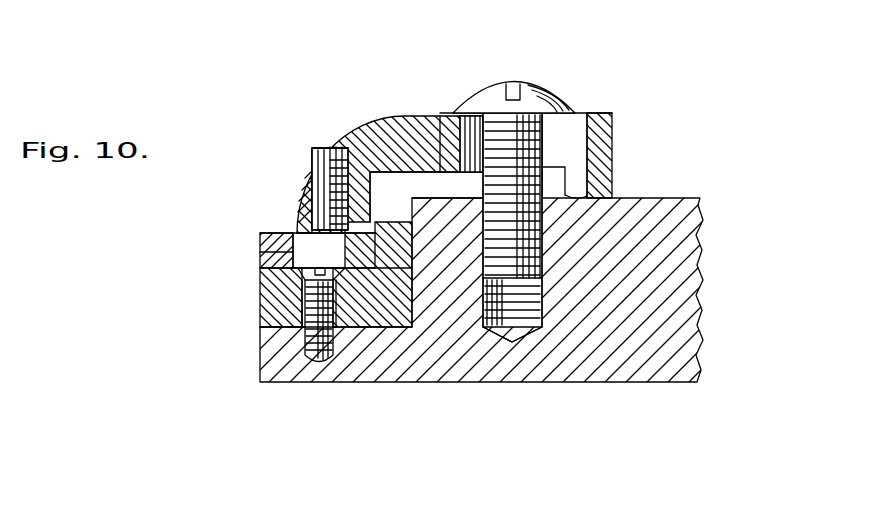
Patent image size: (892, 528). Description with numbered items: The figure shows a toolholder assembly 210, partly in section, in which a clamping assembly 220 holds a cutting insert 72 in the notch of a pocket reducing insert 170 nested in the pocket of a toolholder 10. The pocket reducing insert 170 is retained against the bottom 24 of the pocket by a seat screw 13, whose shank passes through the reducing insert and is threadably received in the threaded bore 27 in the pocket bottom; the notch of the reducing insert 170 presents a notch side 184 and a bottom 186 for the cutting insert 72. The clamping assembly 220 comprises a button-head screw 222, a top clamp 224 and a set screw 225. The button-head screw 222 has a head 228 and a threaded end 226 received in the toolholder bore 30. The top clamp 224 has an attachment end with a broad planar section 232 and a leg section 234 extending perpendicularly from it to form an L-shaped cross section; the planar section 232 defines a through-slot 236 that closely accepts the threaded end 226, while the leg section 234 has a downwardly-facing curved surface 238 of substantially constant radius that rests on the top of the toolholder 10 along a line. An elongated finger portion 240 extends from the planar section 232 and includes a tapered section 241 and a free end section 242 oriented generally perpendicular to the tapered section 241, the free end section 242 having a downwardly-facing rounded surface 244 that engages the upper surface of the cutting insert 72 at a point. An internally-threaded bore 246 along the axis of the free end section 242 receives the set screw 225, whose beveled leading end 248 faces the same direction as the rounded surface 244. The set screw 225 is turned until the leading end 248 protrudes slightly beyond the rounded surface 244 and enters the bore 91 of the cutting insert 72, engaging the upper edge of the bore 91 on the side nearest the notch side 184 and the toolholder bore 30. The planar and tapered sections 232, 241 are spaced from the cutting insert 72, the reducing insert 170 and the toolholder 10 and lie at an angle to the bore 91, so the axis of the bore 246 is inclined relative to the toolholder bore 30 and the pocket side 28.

The toolholder 10 is at (396, 390).
The seat screw 13 is at (313, 363).
The bottom of the pocket 24 is at (260, 318).
The threaded bore 27 is at (309, 363).
The pocket side 28 is at (395, 323).
The toolholder bore 30 is at (523, 342).
The cutting insert 72 is at (250, 233).
The bore of the cutting insert 91 is at (298, 275).
The pocket reducing insert 170 is at (250, 302).
The notch side 184 is at (373, 253).
The notch bottom 186 is at (366, 278).
The toolholder assembly 210 is at (231, 390).
The clamping assembly 220 is at (657, 101).
The button-head screw 222 is at (551, 87).
The top clamp 224 is at (608, 112).
The set screw 225 is at (320, 150).
The threaded end 226 is at (541, 245).
The head 228 is at (481, 110).
The planar section 232 is at (442, 115).
The leg section 234 is at (617, 172).
The through-slot 236 is at (465, 144).
The curved surface 238 is at (617, 193).
The elongated finger portion 240 is at (386, 117).
The tapered section 241 is at (390, 177).
The free end section 242 is at (303, 215).
The rounded surface 244 is at (278, 233).
The internally-threaded bore 246 is at (338, 143).
The leading end 248 is at (260, 253).